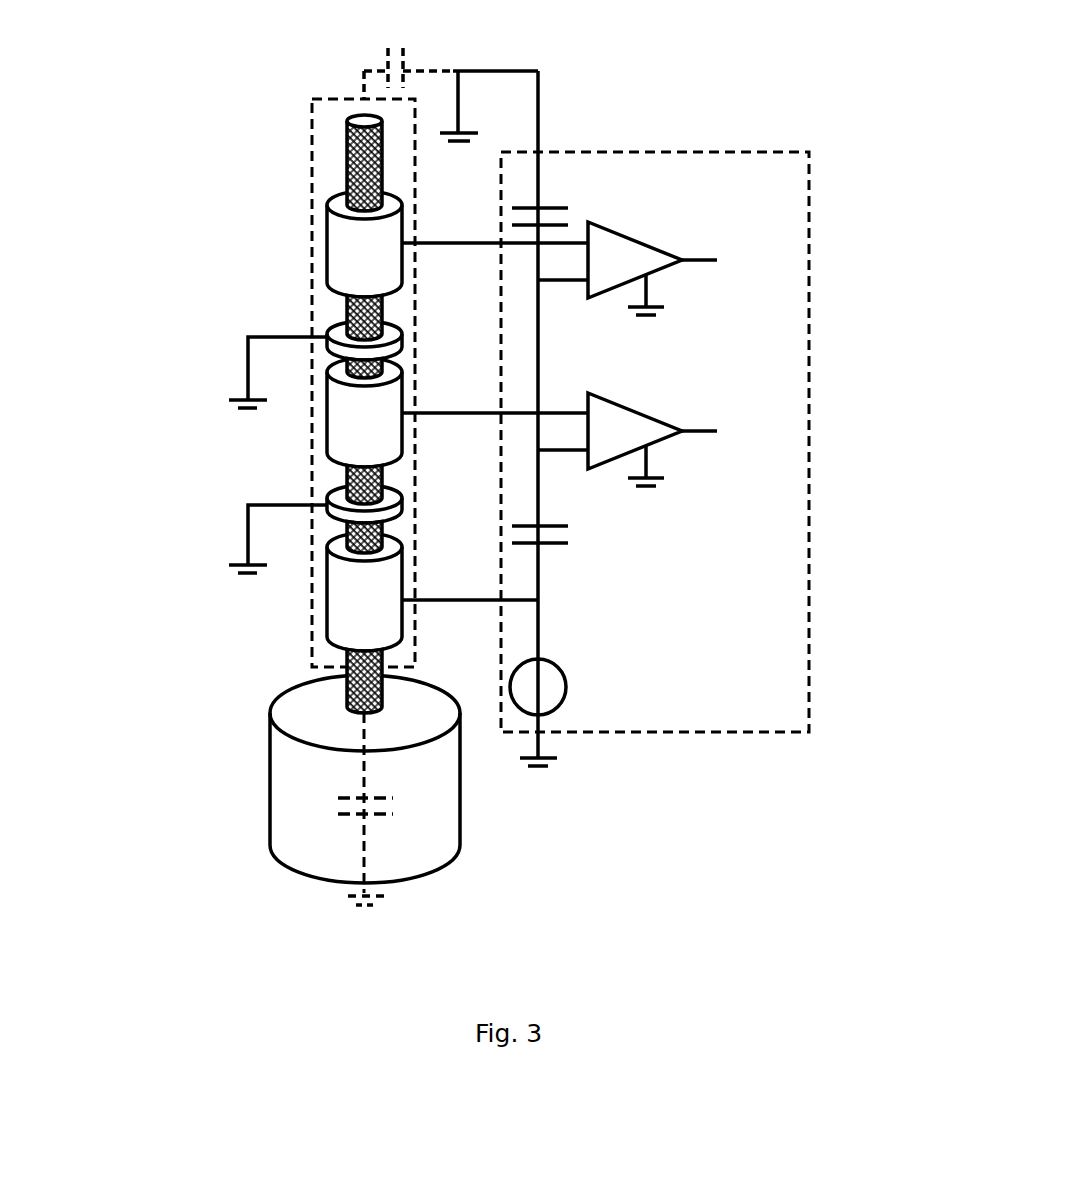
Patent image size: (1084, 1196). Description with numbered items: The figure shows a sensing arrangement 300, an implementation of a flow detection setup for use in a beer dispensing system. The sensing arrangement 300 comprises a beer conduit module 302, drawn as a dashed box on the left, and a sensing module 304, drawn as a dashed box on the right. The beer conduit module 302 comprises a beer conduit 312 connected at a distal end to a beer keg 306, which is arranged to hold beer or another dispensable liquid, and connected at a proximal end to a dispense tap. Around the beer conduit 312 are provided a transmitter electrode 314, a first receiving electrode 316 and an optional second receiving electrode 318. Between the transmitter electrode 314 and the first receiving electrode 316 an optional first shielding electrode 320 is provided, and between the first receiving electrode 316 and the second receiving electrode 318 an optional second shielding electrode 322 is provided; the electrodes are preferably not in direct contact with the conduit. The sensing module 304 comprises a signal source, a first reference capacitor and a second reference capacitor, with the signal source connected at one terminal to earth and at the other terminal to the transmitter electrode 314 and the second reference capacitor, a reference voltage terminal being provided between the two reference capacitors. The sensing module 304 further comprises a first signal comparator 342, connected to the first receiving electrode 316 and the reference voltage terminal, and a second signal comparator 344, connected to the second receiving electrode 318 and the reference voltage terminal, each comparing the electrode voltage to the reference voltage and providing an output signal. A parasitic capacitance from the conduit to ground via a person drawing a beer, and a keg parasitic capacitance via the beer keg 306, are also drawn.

The sensing arrangement 300 is at (878, 848).
The beer conduit module 302 is at (311, 122).
The sensing module 304 is at (655, 150).
The beer keg 306 is at (270, 793).
The beer conduit 312 is at (350, 686).
The transmitter electrode 314 is at (348, 630).
The first receiving electrode 316 is at (337, 441).
The second receiving electrode 318 is at (337, 231).
The first shielding electrode 320 is at (340, 492).
The second shielding electrode 322 is at (322, 322).
The first signal comparator 342 is at (612, 400).
The second signal comparator 344 is at (612, 229).